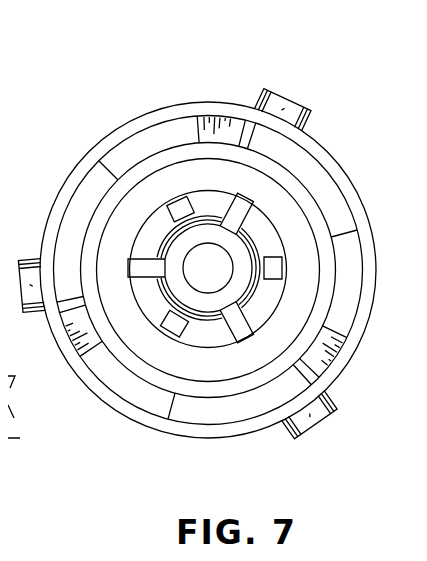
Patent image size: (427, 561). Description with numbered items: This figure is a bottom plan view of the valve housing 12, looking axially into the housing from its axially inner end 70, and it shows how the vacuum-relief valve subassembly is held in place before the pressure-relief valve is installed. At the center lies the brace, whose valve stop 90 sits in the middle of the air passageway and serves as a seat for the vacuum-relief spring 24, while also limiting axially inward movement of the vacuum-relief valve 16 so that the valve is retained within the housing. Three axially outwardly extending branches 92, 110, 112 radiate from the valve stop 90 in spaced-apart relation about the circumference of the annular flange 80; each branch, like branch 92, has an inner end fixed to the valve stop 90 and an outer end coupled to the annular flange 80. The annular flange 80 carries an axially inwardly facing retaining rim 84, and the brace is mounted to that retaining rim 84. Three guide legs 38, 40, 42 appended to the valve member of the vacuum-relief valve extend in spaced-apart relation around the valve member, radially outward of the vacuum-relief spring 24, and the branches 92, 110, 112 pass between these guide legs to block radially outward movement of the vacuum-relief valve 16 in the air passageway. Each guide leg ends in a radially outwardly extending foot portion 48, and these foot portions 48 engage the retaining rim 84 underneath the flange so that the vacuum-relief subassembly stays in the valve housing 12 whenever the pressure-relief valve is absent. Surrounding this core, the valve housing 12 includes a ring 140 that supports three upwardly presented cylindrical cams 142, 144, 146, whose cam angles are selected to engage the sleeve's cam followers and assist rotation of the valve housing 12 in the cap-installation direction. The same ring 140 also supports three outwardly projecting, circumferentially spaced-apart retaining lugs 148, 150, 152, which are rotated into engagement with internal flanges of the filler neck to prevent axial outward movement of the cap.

The valve housing 12 is at (233, 94).
The vacuum-relief valve 16 is at (200, 204).
The vacuum-relief spring 24 is at (206, 310).
The guide leg 38 is at (265, 249).
The guide leg 40 is at (170, 196).
The guide leg 42 is at (163, 324).
The foot portion 48 is at (273, 271).
The axially inner end 70 is at (284, 349).
The annular flange 80 is at (200, 335).
The retaining rim 84 is at (242, 194).
The valve stop 90 is at (213, 270).
The branch 92 is at (128, 256).
The branch 110 is at (236, 326).
The branch 112 is at (300, 139).
The ring 140 is at (208, 424).
The cylindrical cam 142 is at (142, 398).
The cylindrical cam 144 is at (332, 315).
The cylindrical cam 146 is at (174, 122).
The retaining lug 148 is at (304, 424).
The retaining lug 150 is at (284, 92).
The retaining lug 152 is at (19, 240).